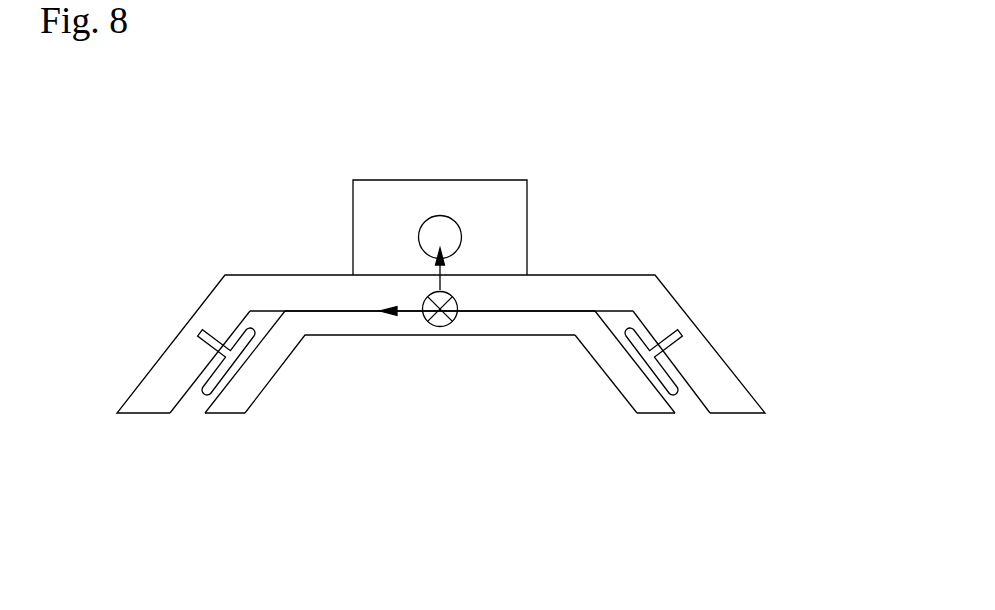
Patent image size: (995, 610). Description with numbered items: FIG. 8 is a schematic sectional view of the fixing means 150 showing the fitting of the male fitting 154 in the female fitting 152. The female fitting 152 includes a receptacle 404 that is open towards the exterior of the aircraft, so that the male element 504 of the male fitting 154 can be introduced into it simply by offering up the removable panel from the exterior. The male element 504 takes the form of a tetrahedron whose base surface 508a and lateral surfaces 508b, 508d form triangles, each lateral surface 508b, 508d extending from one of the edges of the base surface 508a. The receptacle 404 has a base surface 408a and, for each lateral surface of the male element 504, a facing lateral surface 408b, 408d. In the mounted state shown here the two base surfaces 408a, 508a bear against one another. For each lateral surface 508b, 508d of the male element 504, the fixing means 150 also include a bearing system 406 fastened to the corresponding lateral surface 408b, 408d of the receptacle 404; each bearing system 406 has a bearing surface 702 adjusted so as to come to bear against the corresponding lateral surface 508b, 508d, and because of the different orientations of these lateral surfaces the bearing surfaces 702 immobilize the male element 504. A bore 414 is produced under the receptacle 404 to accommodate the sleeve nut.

The fixing means 150 is at (714, 177).
The female fitting 152 is at (189, 206).
The male fitting 154 is at (474, 468).
The receptacle 404 is at (709, 470).
The bearing system 406 is at (640, 354).
The base surface of the receptacle 408a is at (643, 374).
The lateral surface of the receptacle 408b is at (703, 401).
The lateral surface of the receptacle 408d is at (175, 400).
The bore 414 is at (440, 237).
The male element 504 is at (370, 413).
The base surface of the male element 508a is at (543, 312).
The lateral surface of the male element 508b is at (624, 403).
The lateral surface of the male element 508d is at (215, 413).
The bearing surface 702 is at (232, 385).